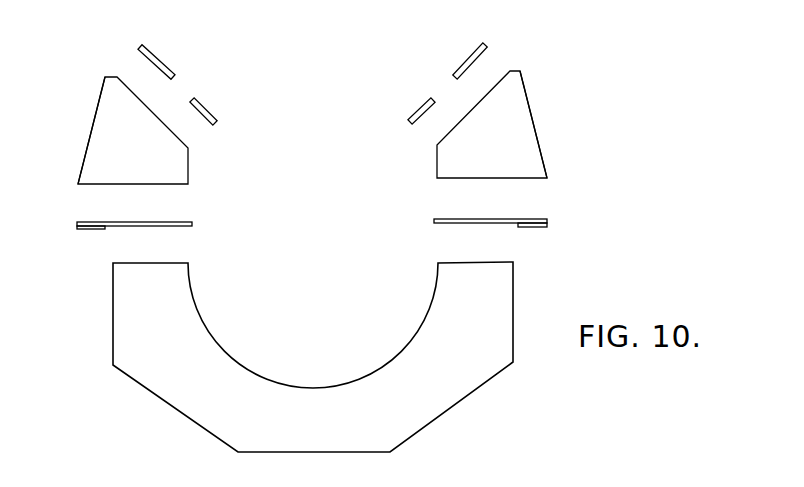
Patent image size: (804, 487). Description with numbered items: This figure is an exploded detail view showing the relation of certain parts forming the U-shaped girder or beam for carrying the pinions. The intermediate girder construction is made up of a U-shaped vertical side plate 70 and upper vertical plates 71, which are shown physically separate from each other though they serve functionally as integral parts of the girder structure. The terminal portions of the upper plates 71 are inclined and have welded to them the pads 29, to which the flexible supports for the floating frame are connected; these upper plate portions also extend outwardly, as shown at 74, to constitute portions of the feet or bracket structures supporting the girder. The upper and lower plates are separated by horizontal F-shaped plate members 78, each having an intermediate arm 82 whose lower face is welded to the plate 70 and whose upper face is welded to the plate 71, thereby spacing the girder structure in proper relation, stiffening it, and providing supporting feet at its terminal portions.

The vertical side plate 70 is at (317, 391).
The vertical side plate 71 is at (188, 158).
The outwardly extending plate portion 74 is at (82, 170).
The pad 29 is at (173, 76).
The intermediate arm 82 is at (189, 222).
The F-shaped plate member 78 is at (109, 227).